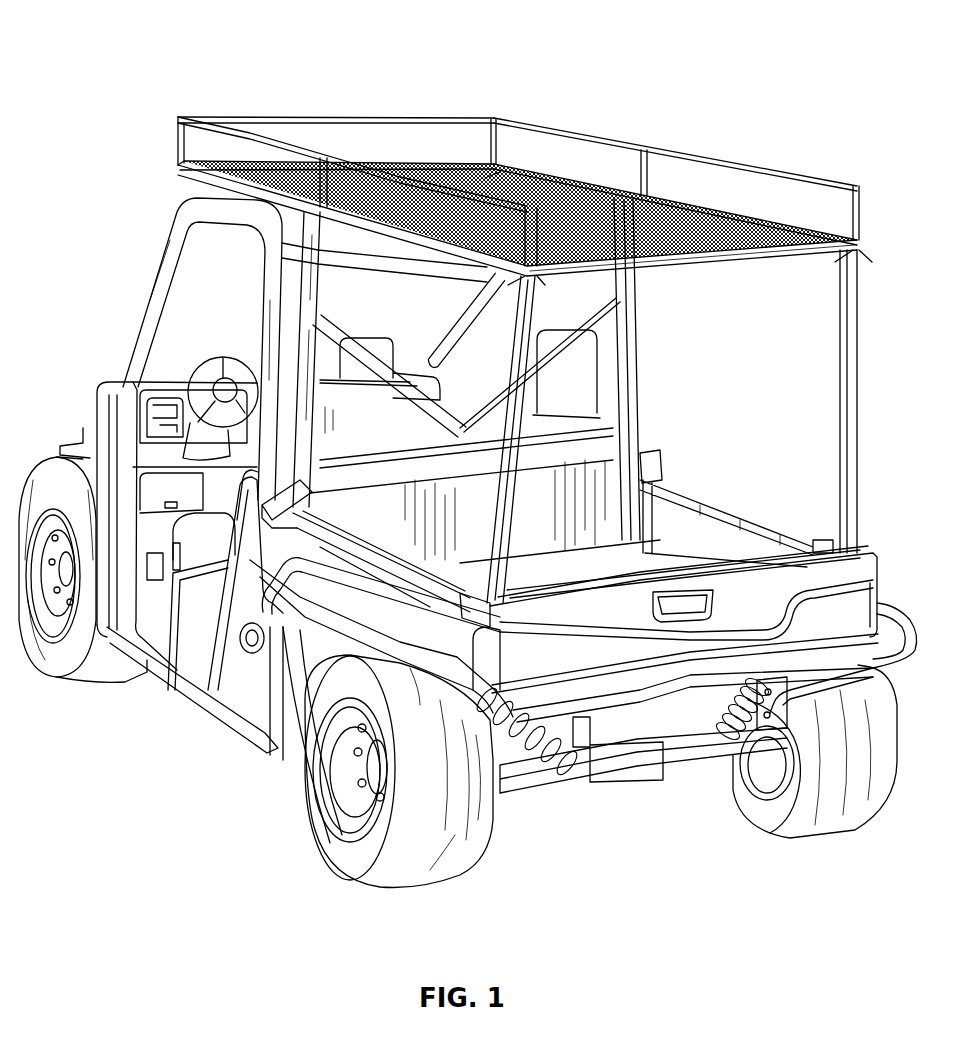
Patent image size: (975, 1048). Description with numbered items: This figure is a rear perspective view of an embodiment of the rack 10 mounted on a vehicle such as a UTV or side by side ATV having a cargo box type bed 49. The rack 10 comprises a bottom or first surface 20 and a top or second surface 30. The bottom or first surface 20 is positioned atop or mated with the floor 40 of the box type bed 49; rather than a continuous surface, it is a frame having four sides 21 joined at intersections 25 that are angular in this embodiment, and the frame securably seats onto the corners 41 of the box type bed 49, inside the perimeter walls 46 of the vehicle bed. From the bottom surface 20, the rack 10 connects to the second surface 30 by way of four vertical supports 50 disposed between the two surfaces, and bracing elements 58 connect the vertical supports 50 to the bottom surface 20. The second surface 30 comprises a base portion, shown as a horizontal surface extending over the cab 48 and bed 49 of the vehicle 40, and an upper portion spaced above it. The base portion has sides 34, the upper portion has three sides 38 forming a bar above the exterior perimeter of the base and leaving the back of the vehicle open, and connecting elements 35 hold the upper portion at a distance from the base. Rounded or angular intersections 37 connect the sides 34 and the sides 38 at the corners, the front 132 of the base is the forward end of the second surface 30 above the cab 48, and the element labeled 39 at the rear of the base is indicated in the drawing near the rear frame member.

The rack 10 is at (855, 177).
The bottom or first surface 20 is at (640, 453).
The sides 21 is at (747, 567).
The intersections 25 is at (617, 527).
The top or second surface 30 is at (868, 188).
The sides of the base portion 34 is at (263, 163).
The connecting elements 35 is at (473, 147).
The intersections 37 is at (188, 115).
The sides of the upper portion 38 is at (233, 132).
The platform 39 is at (760, 268).
The floor 40 is at (473, 585).
The corners 41 is at (618, 560).
The perimeter walls 46 is at (400, 505).
The cab 48 is at (145, 300).
The box type bed 49 is at (510, 585).
The vertical supports 50 is at (317, 320).
The bracing elements 58 is at (650, 513).
The front of the base 132 is at (327, 82).